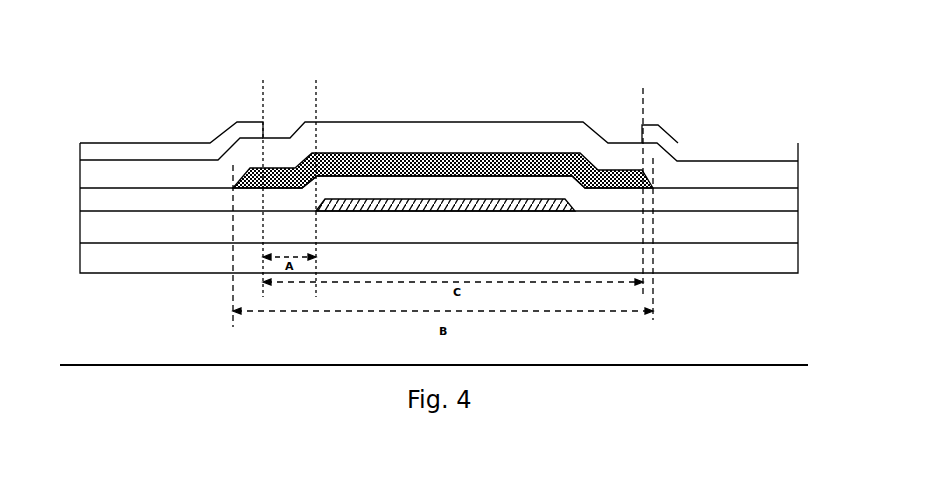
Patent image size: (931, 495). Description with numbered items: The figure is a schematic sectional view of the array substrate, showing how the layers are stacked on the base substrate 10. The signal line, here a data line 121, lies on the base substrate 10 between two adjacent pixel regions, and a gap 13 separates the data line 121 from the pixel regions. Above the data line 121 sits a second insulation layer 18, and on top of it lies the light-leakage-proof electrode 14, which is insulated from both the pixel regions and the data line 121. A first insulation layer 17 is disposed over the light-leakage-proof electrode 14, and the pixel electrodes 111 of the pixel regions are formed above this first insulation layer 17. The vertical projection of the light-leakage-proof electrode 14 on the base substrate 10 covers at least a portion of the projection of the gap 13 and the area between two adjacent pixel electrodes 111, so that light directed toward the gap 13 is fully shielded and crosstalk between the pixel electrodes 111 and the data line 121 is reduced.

The base substrate 10 is at (138, 258).
The gap 13 is at (315, 78).
The light-leakage-proof electrode 14 is at (330, 163).
The first insulation layer 17 is at (408, 137).
The data line 121 is at (467, 207).
The second insulation layer 18 is at (543, 185).
The pixel electrode 111 is at (655, 133).